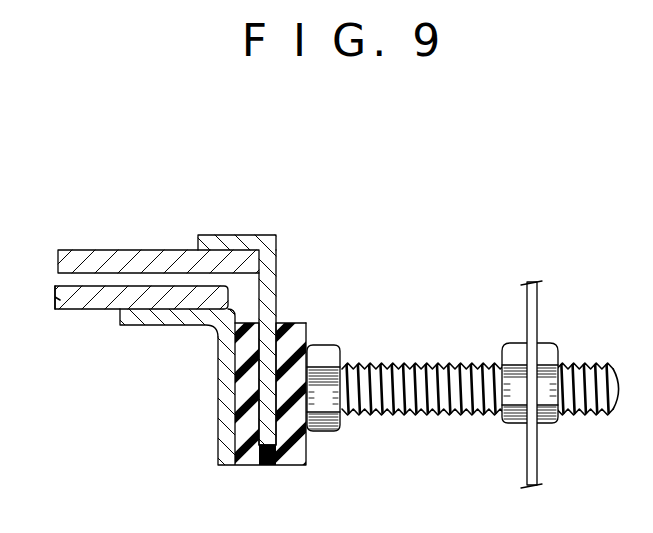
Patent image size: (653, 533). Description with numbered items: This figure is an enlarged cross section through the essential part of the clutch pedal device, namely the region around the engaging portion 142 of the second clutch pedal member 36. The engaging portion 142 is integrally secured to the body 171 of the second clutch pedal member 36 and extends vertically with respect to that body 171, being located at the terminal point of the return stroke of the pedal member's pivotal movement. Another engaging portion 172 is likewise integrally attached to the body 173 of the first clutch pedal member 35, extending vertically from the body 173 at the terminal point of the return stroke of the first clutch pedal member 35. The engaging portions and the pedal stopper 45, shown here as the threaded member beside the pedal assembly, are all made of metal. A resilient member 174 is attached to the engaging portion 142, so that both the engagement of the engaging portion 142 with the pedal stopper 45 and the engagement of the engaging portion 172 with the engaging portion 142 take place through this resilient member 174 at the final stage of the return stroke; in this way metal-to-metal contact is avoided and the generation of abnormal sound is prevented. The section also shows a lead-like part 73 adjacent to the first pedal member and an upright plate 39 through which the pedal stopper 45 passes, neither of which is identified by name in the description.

The second clutch pedal member 36 is at (119, 250).
The body 171 is at (179, 252).
The engaging portion 142 is at (276, 292).
The lead wire 73 is at (55, 298).
The first clutch pedal member 35 is at (86, 309).
The body 173 is at (149, 310).
The engaging portion 172 is at (224, 379).
The resilient member 174 is at (294, 457).
The pedal stopper 45 is at (414, 363).
The panel 39 is at (537, 318).